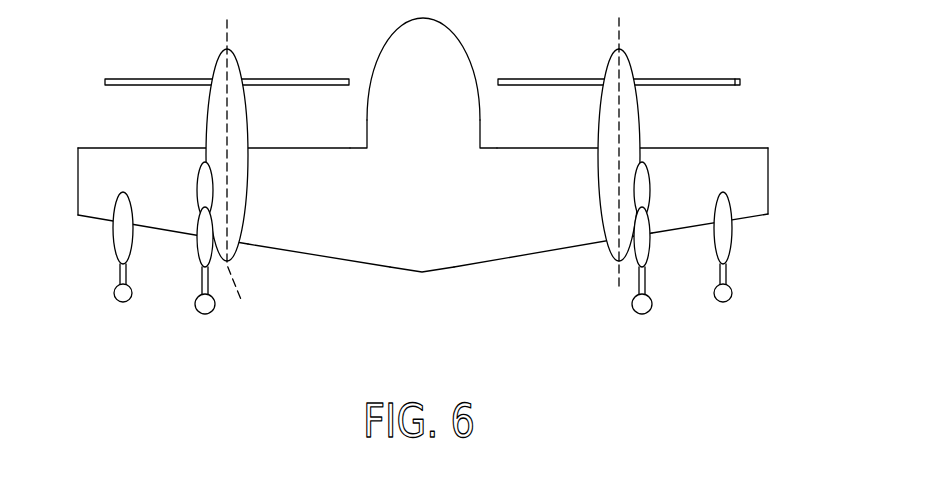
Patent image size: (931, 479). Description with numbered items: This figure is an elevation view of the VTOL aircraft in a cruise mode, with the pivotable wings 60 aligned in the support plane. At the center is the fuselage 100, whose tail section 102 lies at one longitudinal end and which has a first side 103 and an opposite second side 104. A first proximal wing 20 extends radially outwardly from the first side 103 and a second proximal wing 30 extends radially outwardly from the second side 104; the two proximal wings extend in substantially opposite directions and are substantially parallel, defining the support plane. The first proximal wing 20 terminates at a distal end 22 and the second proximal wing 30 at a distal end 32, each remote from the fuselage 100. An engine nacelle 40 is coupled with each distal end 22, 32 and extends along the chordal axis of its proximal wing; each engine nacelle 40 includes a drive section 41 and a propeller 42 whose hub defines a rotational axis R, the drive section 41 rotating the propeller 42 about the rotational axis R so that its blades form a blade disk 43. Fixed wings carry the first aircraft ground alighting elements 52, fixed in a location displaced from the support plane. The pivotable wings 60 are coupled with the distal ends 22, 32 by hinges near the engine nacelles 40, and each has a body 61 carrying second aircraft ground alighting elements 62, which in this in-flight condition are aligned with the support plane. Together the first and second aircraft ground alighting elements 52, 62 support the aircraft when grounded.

The fuselage 100 is at (755, 180).
The tail section 102 is at (422, 273).
The first side 103 is at (463, 143).
The second side 104 is at (378, 135).
The first proximal wing 20 is at (583, 160).
The distal end 22 is at (597, 243).
The second proximal wing 30 is at (268, 158).
The distal end 32 is at (242, 243).
The engine nacelle 40 is at (213, 125).
The drive section 41 is at (632, 115).
The propeller 42 is at (582, 80).
The blade disk 43 is at (740, 83).
The first aircraft ground alighting elements 52 is at (200, 280).
The pivotable wing 60 is at (78, 207).
The body 61 is at (100, 203).
The second aircraft ground alighting elements 62 is at (118, 273).
The rotational axis R is at (665, 52).